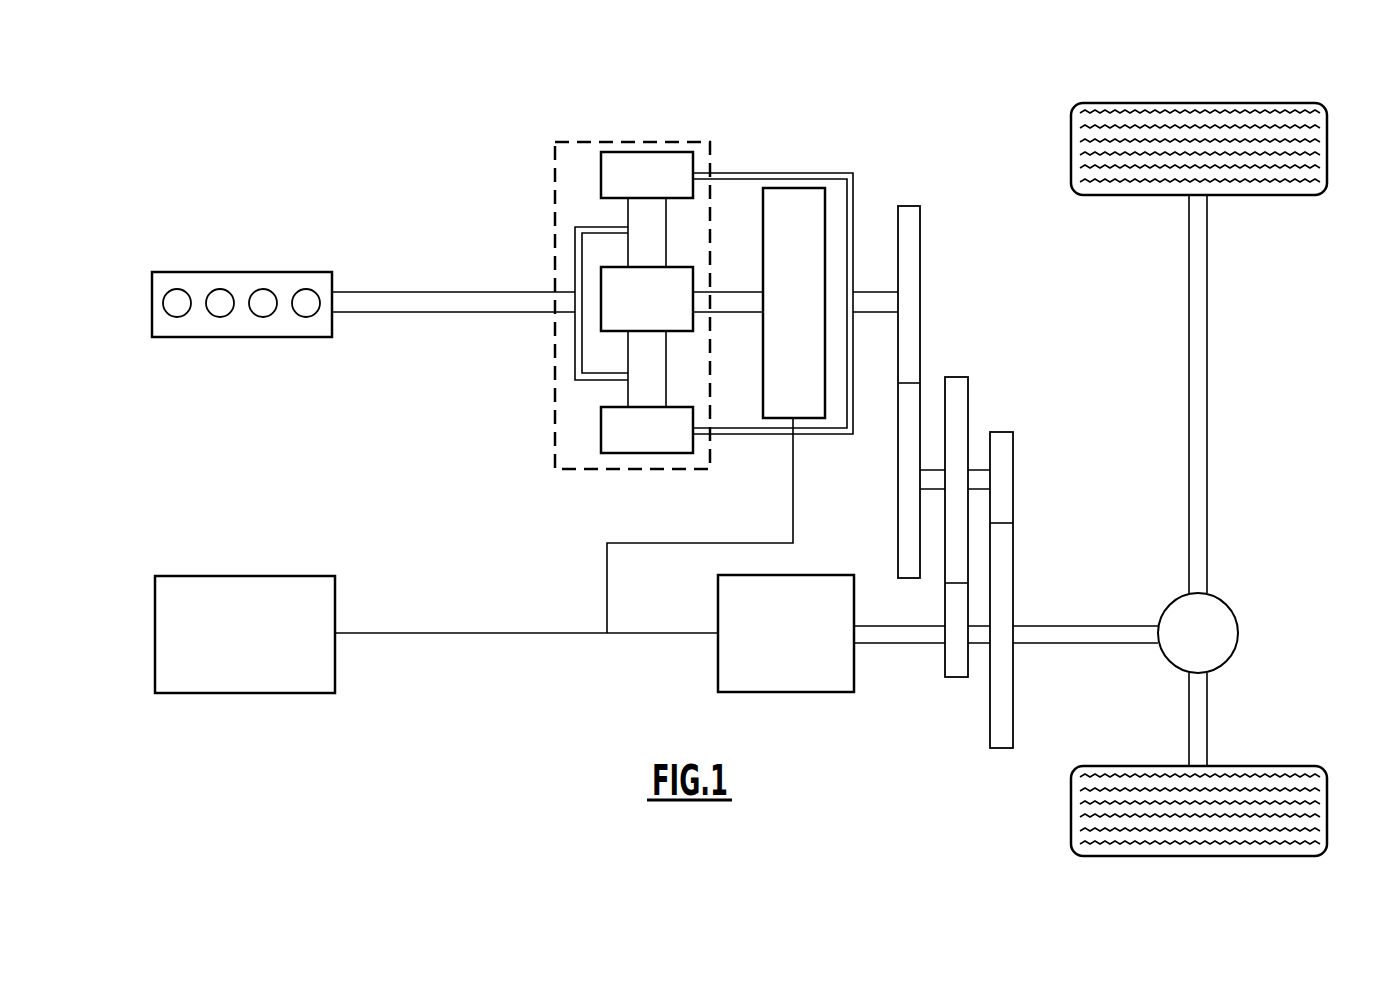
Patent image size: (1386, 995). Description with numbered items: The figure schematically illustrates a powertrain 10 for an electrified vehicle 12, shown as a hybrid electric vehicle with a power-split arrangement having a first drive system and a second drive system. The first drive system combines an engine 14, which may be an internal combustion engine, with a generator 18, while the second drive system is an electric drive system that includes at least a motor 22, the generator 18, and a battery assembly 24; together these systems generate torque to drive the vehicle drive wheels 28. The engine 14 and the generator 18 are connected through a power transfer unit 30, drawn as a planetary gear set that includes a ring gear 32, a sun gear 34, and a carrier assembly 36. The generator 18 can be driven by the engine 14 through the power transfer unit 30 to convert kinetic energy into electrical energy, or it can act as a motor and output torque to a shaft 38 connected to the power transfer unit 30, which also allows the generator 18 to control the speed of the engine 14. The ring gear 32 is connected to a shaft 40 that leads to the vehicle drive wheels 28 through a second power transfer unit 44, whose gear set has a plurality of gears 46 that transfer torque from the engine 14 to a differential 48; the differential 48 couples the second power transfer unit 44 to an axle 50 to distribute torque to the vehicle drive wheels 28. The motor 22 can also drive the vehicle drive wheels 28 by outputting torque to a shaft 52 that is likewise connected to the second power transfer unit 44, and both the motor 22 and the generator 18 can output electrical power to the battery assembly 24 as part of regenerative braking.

The powertrain 10 is at (395, 172).
The electrified vehicle 12 is at (818, 98).
The engine 14 is at (170, 272).
The generator 18 is at (770, 188).
The motor 22 is at (854, 672).
The battery assembly 24 is at (172, 576).
The vehicle drive wheels 28 is at (1327, 810).
The power transfer unit 30 is at (553, 423).
The ring gear 32 is at (601, 175).
The sun gear 34 is at (601, 272).
The carrier assembly 36 is at (575, 365).
The shaft 38 is at (729, 291).
The shaft 40 is at (873, 290).
The second power transfer unit 44 is at (995, 338).
The gears 46 is at (920, 343).
The differential 48 is at (1233, 655).
The axle 50 is at (1207, 383).
The shaft 52 is at (909, 643).